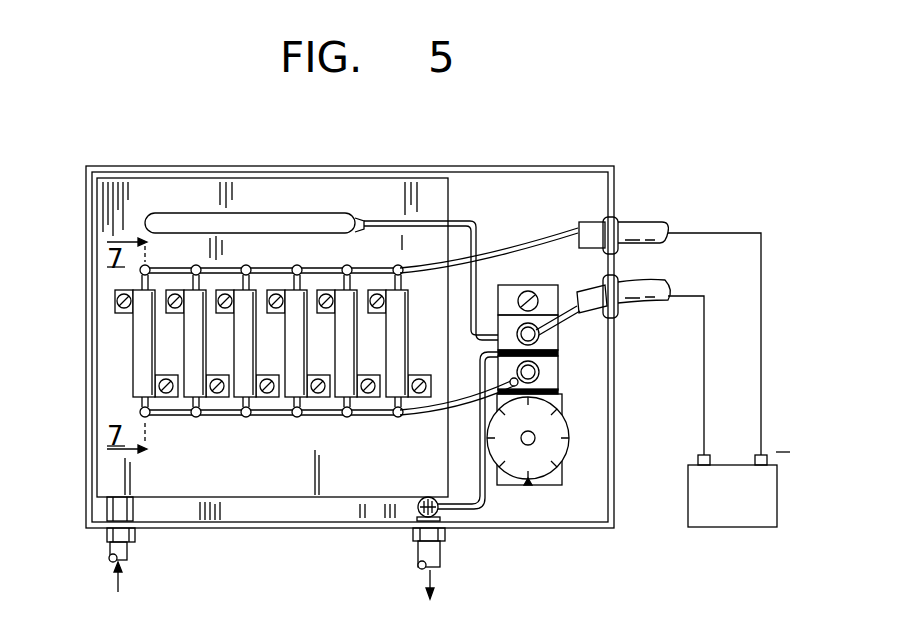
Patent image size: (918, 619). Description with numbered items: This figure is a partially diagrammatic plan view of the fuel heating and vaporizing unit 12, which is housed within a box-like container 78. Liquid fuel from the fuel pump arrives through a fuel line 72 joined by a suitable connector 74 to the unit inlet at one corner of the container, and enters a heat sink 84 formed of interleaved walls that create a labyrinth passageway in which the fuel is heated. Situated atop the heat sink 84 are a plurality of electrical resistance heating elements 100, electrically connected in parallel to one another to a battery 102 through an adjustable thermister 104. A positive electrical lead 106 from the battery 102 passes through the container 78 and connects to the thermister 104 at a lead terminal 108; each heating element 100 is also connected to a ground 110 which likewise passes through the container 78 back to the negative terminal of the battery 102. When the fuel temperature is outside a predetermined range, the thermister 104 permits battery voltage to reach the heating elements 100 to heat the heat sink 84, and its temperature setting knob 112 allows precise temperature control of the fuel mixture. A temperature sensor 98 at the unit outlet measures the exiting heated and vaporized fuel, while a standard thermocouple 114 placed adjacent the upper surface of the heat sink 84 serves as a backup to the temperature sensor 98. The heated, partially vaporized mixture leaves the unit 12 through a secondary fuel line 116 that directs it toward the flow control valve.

The fuel heating and vaporizing unit 12 is at (134, 154).
The box-like container 78 is at (388, 166).
The heat sink 84 is at (290, 478).
The thermocouple 114 is at (307, 213).
The electrical resistance heating elements 100 is at (188, 348).
The ground 110 is at (530, 244).
The positive electrical lead 106 is at (572, 270).
The lead terminal 108 is at (565, 348).
The adjustable thermister 104 is at (567, 380).
The temperature setting knob 112 is at (562, 432).
The temperature sensor 98 is at (428, 497).
The fuel line 72 is at (107, 550).
The connector 74 is at (137, 533).
The secondary fuel line 116 is at (438, 551).
The battery 102 is at (737, 515).